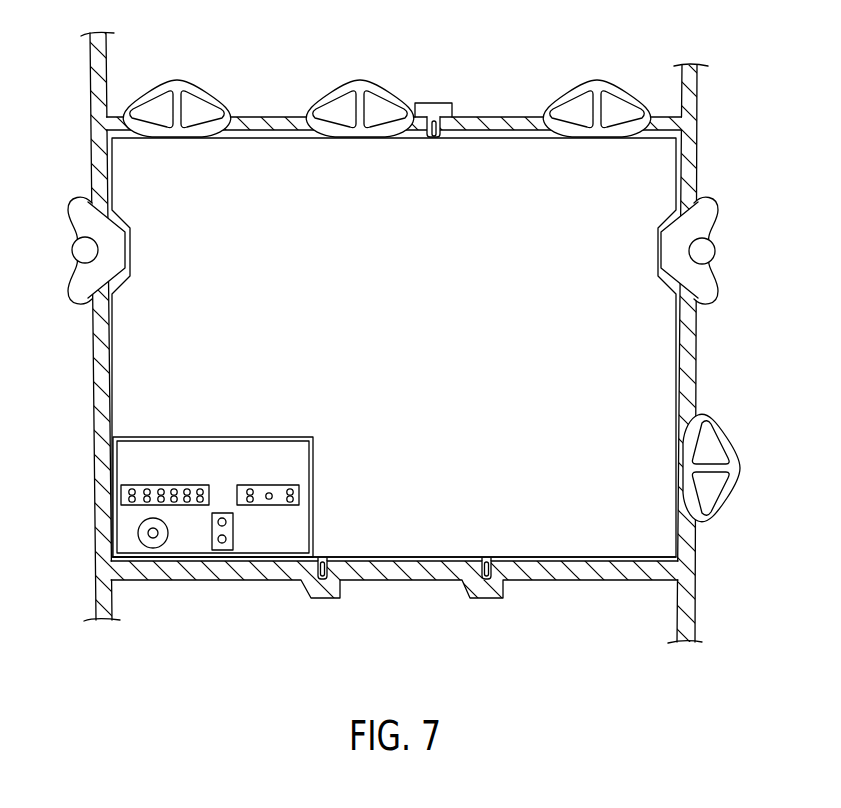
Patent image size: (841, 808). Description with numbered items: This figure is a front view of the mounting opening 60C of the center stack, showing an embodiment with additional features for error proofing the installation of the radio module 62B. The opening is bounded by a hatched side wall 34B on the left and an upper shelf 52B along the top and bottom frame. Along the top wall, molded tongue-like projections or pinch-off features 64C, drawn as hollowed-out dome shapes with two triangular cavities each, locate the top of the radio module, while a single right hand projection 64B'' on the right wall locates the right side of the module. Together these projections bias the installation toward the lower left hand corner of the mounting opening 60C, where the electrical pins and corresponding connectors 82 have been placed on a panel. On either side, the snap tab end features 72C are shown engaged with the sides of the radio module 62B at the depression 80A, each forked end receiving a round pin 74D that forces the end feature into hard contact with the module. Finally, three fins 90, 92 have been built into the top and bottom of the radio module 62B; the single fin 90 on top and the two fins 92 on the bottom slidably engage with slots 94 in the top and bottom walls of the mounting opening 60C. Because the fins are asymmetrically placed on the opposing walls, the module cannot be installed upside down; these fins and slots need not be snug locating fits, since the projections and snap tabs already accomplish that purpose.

The side wall 34B is at (100, 376).
The mounting opening 60C is at (712, 553).
The upper shelf 52B is at (533, 572).
The radio module 62B is at (352, 538).
The tongue-like projections 64C is at (220, 106).
The right hand projection 64B'' is at (730, 459).
The fin 90 is at (436, 140).
The slots 94 is at (433, 118).
The fins 92 is at (323, 558).
The snap tab end features 72C is at (72, 205).
The depression 80A is at (125, 281).
The pin 74D is at (82, 250).
The electrical pins and connectors 82 is at (258, 485).